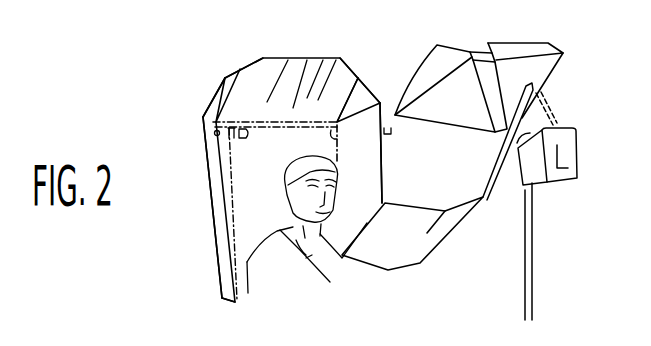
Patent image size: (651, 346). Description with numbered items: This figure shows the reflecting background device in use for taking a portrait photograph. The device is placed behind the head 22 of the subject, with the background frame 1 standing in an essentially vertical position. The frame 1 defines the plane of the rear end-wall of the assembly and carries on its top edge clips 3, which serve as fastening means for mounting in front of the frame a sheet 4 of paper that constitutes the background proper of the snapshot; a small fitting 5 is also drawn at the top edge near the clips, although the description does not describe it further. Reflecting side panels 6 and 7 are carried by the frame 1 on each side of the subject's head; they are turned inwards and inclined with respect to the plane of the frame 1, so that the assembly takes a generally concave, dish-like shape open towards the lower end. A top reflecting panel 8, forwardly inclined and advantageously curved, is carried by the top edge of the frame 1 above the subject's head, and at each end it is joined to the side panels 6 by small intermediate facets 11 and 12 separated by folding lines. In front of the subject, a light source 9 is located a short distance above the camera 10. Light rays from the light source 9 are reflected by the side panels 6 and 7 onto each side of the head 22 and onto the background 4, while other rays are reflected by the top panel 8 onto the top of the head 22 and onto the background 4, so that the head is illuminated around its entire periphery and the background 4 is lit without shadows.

The frame 1 is at (277, 122).
The clips 3 is at (232, 135).
The sheet of paper 4 is at (250, 168).
The pivot 5 is at (214, 135).
The reflecting panel 6 is at (212, 213).
The reflecting panel 7 is at (222, 263).
The top reflecting panel 8 is at (302, 63).
The light source 9 is at (450, 58).
The camera 10 is at (543, 186).
The intermediate facet 11 is at (217, 102).
The intermediate facet 12 is at (232, 77).
The head 22 is at (292, 178).